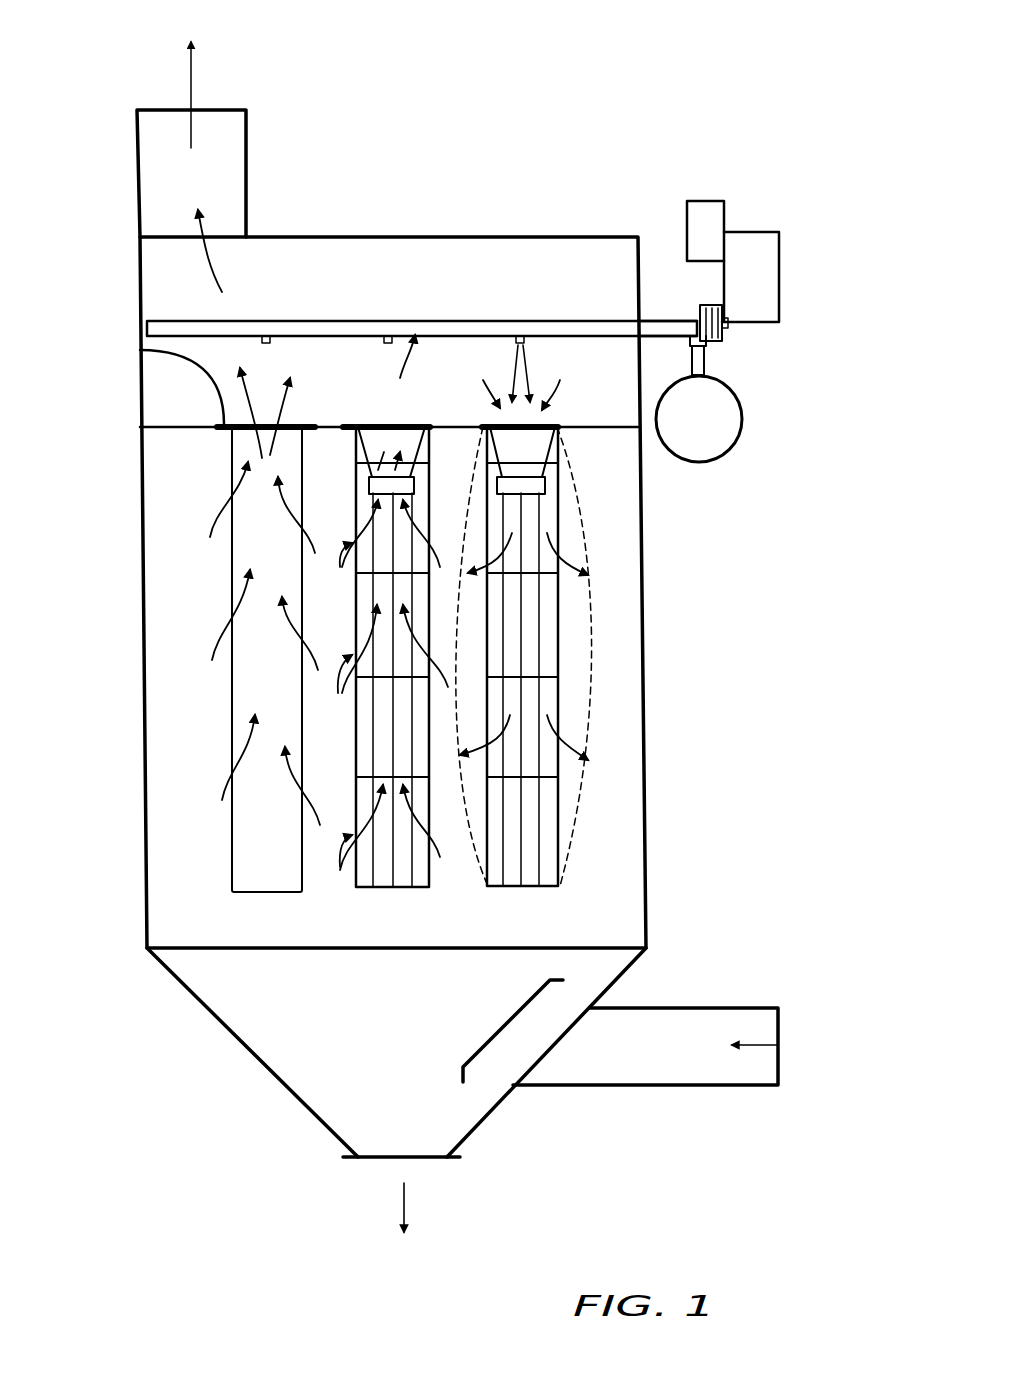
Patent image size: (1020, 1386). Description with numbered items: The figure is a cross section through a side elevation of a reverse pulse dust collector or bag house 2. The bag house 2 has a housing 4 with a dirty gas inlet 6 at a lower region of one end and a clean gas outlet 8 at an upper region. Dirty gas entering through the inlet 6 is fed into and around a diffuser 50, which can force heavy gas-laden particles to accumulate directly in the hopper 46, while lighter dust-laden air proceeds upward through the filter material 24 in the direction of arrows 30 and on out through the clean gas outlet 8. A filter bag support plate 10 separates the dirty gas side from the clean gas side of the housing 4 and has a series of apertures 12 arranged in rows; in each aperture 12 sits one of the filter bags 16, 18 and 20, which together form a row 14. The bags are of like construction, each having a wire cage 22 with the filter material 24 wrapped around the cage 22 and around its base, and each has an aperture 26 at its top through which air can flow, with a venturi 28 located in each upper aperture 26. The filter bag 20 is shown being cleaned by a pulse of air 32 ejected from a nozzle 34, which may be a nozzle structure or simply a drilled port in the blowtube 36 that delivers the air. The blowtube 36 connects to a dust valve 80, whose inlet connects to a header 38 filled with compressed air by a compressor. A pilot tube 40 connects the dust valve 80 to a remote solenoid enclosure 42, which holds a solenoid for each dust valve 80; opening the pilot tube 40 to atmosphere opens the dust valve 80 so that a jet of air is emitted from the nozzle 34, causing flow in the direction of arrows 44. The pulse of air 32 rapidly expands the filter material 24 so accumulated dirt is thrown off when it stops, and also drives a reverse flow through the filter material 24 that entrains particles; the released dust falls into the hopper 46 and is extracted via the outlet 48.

The bag house 2 is at (628, 104).
The housing 4 is at (140, 600).
The dirty gas inlet 6 is at (682, 1046).
The clean gas outlet 8 is at (246, 125).
The filter bag support plate 10 is at (165, 424).
The apertures 12 is at (228, 432).
The row 14 is at (600, 540).
The filter bag 16 is at (260, 893).
The filter bag 18 is at (378, 890).
The filter bag 20 is at (517, 891).
The wire cage 22 is at (560, 632).
The filter material 24 is at (590, 655).
The aperture 26 is at (277, 423).
The venturi 28 is at (140, 350).
The arrows 30 is at (213, 284).
The pulse of air 32 is at (522, 368).
The nozzle 34 is at (520, 333).
The blowtube 36 is at (602, 325).
The header 38 is at (743, 417).
The pilot tube 40 is at (780, 260).
The solenoid enclosure 42 is at (725, 208).
The arrows 44 is at (580, 568).
The hopper 46 is at (258, 1065).
The outlet 48 is at (425, 1160).
The diffuser 50 is at (500, 1022).
The dust valve 80 is at (722, 342).